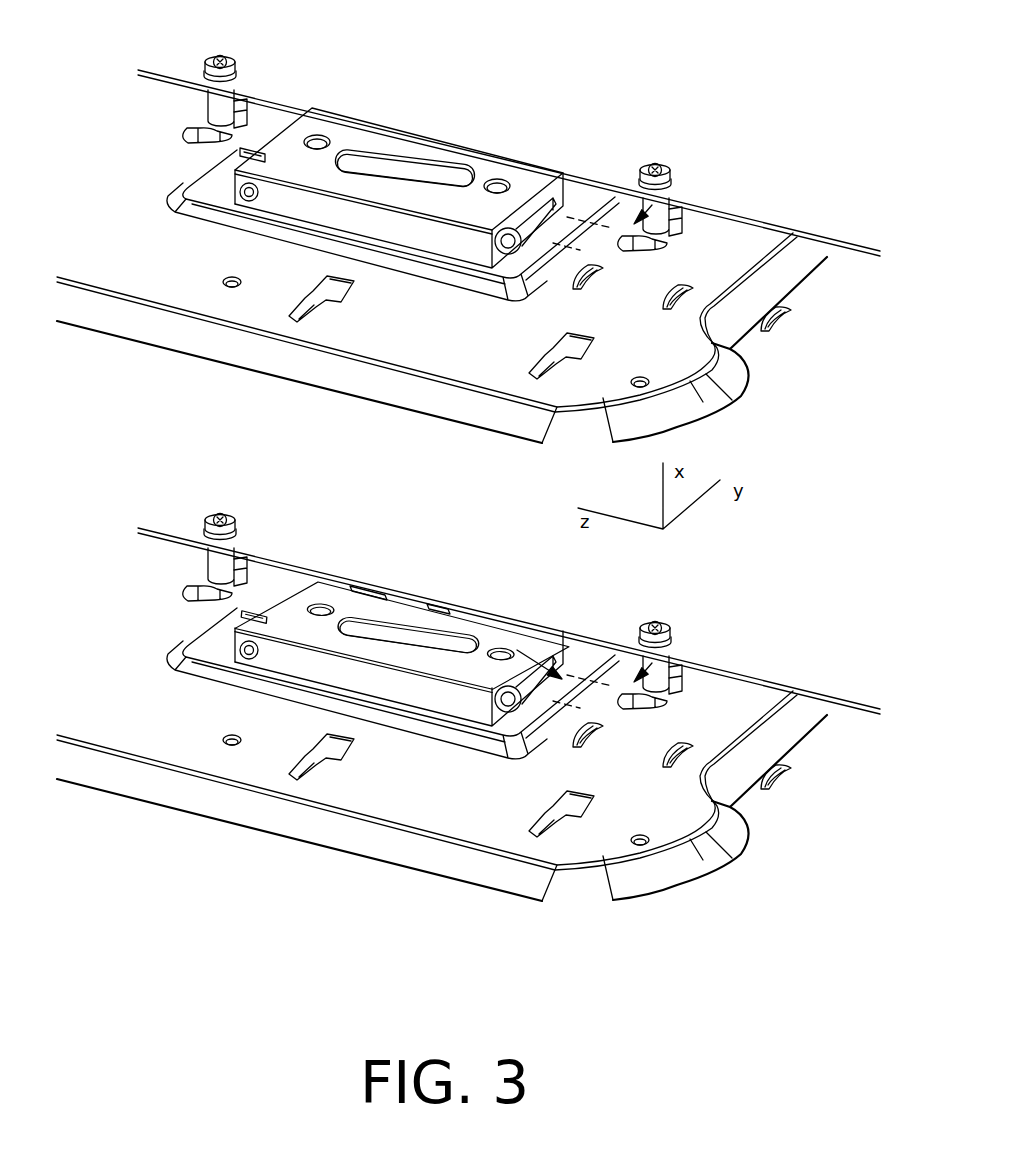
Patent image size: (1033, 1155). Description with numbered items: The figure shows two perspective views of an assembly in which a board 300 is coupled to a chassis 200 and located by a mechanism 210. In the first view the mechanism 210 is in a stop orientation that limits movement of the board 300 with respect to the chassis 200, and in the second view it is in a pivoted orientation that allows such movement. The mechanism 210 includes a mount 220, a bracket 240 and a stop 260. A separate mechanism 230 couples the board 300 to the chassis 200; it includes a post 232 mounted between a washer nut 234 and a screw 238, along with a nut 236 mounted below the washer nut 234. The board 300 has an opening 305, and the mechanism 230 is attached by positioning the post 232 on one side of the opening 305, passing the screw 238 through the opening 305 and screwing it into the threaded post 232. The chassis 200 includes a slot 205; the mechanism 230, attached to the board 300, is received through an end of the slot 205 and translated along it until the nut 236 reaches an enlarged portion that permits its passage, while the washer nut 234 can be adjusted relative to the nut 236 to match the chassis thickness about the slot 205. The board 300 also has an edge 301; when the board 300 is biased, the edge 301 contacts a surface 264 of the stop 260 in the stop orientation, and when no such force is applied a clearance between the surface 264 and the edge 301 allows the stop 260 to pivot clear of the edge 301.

The chassis 200 is at (633, 325).
The slot 205 is at (237, 153).
The mechanism 210 is at (158, 224).
The mount 220 is at (423, 267).
The mechanism 230 is at (203, 336).
The post 232 is at (220, 100).
The washer nut 234 is at (213, 130).
The nut 236 is at (215, 148).
The screw 238 is at (205, 60).
The bracket 240 is at (298, 202).
The stop 260 is at (497, 180).
The surface 264 is at (398, 128).
The board 300 is at (491, 369).
The edge 301 is at (290, 107).
The opening 305 is at (237, 72).